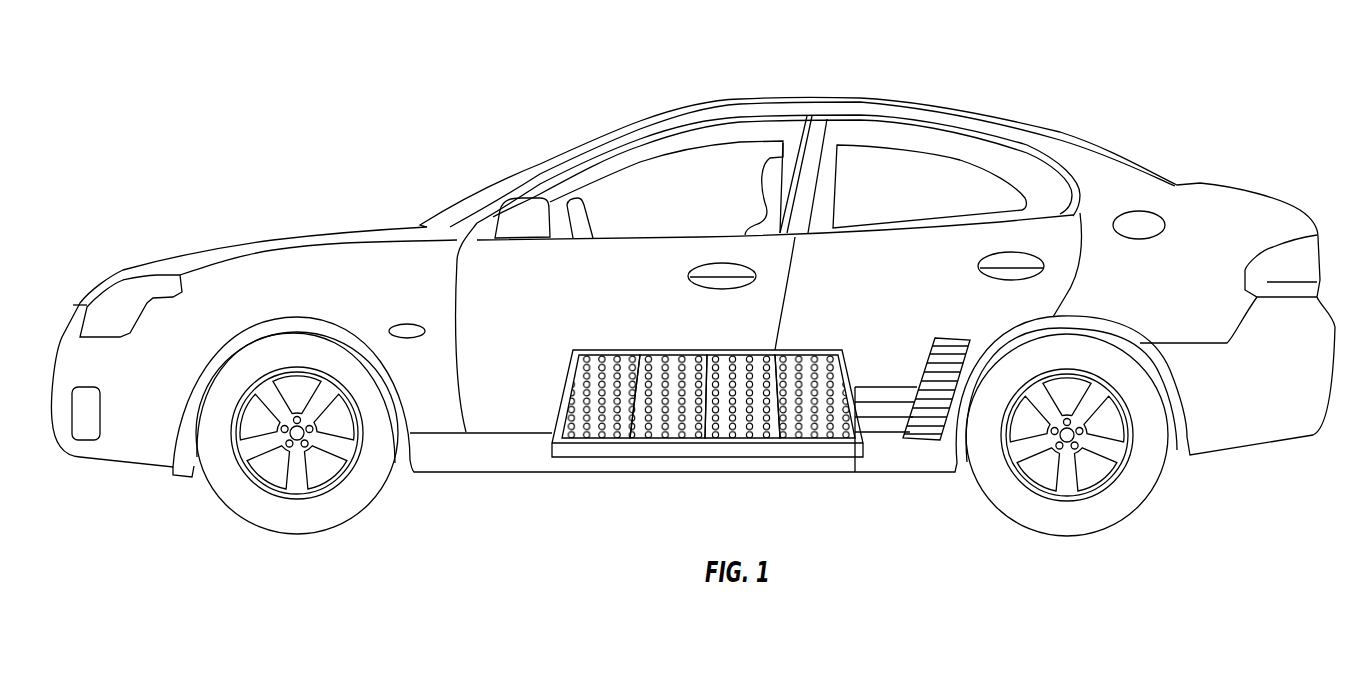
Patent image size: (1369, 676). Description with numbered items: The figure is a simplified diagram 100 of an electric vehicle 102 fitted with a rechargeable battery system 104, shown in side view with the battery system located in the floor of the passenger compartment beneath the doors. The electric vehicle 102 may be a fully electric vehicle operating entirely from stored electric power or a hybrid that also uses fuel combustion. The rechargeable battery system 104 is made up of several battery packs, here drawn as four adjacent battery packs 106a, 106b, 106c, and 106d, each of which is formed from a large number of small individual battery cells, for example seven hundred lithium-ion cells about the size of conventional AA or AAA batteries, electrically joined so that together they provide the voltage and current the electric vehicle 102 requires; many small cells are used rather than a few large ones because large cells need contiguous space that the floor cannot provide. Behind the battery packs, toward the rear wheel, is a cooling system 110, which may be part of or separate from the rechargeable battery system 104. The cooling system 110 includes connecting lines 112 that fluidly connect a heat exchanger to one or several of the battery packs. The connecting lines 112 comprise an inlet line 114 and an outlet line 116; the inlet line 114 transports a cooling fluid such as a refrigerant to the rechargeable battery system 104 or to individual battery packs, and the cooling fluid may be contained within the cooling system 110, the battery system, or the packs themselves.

The simplified diagram 100 is at (400, 73).
The electric vehicle 102 is at (788, 95).
The rechargeable battery system 104 is at (708, 412).
The battery pack 106a is at (583, 350).
The battery pack 106b is at (663, 350).
The battery pack 106c is at (743, 350).
The battery pack 106d is at (823, 353).
The cooling system 110 is at (918, 414).
The connecting lines 112 is at (892, 463).
The inlet line 114 is at (867, 383).
The outlet line 116 is at (890, 435).